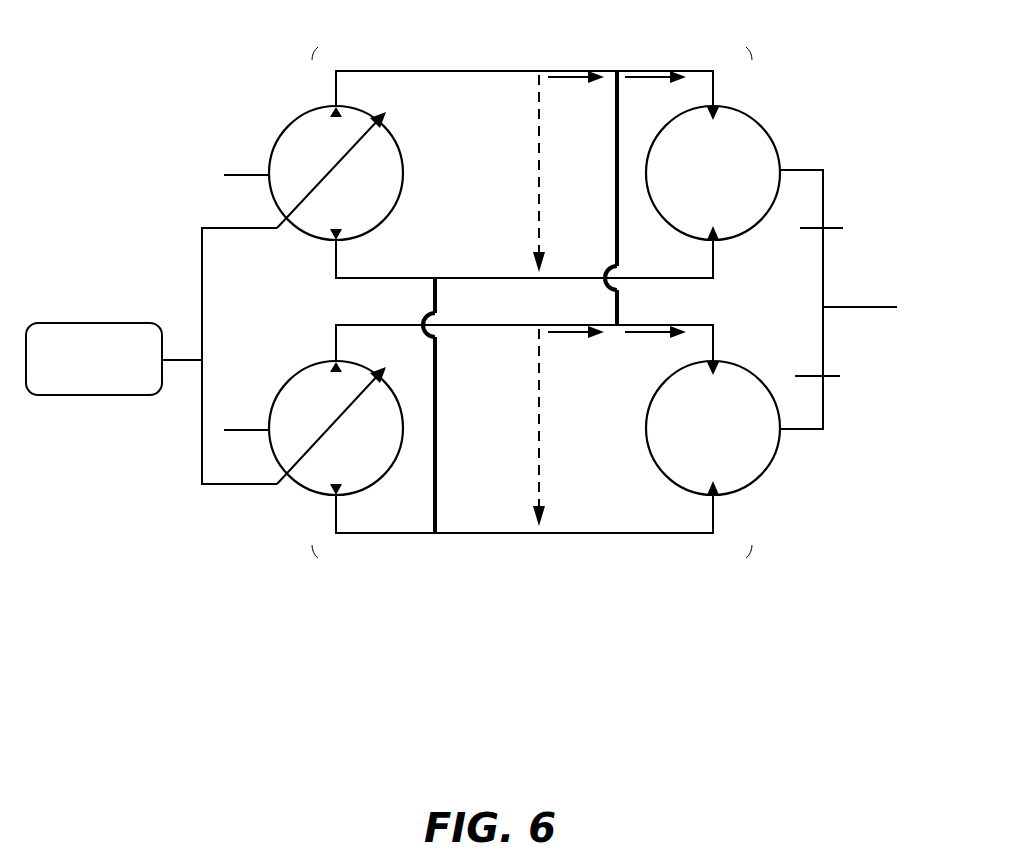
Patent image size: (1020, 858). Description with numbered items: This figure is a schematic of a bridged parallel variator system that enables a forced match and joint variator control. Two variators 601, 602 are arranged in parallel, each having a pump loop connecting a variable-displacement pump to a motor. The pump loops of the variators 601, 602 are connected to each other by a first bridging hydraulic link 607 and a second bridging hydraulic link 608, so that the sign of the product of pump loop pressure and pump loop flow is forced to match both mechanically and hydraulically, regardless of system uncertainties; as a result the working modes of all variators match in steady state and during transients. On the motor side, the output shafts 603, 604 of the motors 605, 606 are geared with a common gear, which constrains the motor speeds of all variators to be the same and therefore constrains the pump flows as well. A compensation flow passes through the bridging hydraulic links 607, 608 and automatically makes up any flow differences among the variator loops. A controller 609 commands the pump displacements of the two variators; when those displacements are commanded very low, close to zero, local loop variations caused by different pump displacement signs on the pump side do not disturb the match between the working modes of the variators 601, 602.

The first variator 601 is at (537, 47).
The second variator 602 is at (537, 555).
The first output shaft 603 is at (788, 165).
The second output shaft 604 is at (790, 433).
The first motor 605 is at (713, 173).
The second motor 606 is at (713, 428).
The first bridging hydraulic link 607 is at (616, 195).
The second bridging hydraulic link 608 is at (438, 397).
The controller 609 is at (151, 356).